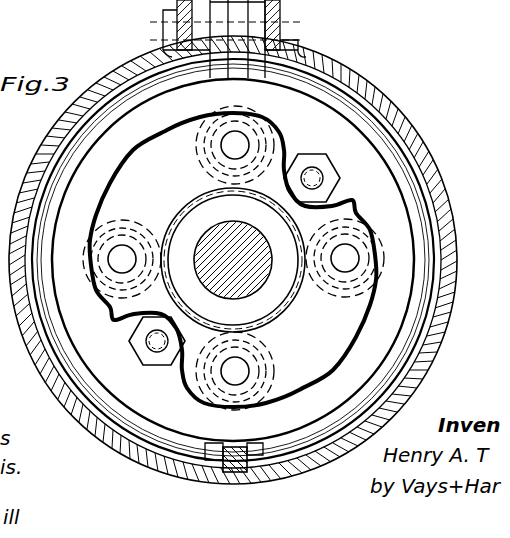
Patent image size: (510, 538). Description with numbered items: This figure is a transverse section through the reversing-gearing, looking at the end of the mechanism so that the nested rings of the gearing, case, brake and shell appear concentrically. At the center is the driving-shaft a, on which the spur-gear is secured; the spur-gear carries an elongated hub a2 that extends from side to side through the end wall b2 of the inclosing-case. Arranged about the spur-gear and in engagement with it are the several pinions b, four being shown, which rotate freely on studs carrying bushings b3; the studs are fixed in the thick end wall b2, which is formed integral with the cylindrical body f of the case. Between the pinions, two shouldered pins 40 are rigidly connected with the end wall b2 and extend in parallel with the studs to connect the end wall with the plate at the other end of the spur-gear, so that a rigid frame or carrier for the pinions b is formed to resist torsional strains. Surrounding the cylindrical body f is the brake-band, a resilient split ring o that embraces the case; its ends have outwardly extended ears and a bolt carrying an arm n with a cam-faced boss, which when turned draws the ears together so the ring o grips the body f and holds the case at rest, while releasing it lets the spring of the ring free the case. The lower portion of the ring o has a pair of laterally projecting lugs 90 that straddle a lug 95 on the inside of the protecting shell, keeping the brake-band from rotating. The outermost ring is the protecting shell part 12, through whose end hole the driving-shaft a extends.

The protecting shell part 12 is at (432, 155).
The split ring o is at (418, 311).
The cylindrical body f is at (337, 105).
The end wall b2 is at (330, 128).
The bushing b3 is at (345, 278).
The driving-shaft a is at (213, 235).
The elongated hub a2 is at (265, 298).
The pinion b is at (222, 114).
The shouldered pin 40 is at (315, 180).
The lug 90 is at (207, 448).
The lug 95 is at (247, 472).
The arm n is at (180, 8).